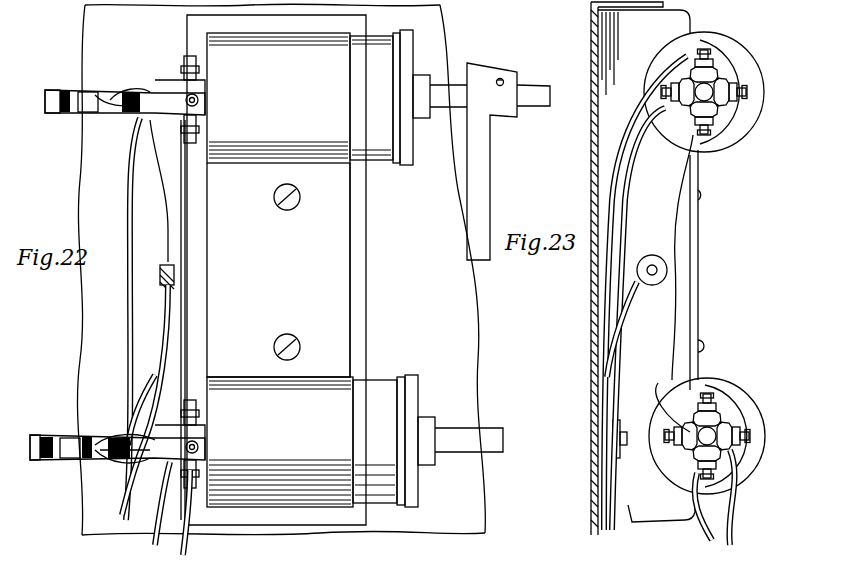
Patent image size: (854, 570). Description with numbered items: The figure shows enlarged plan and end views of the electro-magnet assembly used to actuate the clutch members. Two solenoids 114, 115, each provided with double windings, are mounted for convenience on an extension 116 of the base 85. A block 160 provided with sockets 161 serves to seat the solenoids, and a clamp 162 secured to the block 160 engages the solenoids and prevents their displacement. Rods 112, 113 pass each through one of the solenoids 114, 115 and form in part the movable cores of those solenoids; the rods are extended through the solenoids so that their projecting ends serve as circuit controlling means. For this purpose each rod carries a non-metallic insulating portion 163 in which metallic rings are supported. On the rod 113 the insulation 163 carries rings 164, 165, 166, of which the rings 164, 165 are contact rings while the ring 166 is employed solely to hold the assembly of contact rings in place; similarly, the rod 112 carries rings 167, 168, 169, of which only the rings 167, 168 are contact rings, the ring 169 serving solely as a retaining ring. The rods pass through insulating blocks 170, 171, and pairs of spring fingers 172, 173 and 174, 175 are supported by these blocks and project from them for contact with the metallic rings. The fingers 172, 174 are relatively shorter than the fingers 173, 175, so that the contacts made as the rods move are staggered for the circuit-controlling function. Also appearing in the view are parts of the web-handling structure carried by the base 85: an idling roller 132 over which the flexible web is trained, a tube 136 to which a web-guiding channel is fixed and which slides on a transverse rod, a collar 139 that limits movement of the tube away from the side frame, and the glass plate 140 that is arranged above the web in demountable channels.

In FIG. 23, the base 85 is at (627, 284).
In FIG. 22, the rod 112 is at (460, 452).
In FIG. 22, the rod 113 is at (447, 110).
In FIG. 22, the solenoid 114 is at (370, 492).
In FIG. 22, the solenoid 115 is at (380, 160).
In FIG. 22, the extension of the base 116 is at (470, 303).
In FIG. 23, the extension of the base 116 is at (593, 300).
In FIG. 23, the idling roller 132 is at (663, 559).
In FIG. 22, the tube 136 is at (208, 566).
In FIG. 22, the collar 139 is at (275, 564).
In FIG. 22, the glass plate 140 is at (468, 564).
In FIG. 22, the block 160 is at (360, 232).
In FIG. 23, the block 160 is at (667, 298).
In FIG. 23, the socket 161 is at (680, 44).
In FIG. 22, the clamp 162 is at (340, 285).
In FIG. 23, the clamp 162 is at (700, 212).
In FIG. 22, the non-metallic insulating portion 163 is at (65, 88).
In FIG. 22, the metallic ring 164 is at (127, 84).
In FIG. 22, the metallic ring 165 is at (92, 88).
In FIG. 22, the metallic ring 166 is at (46, 90).
In FIG. 22, the metallic ring 167 is at (100, 436).
In FIG. 22, the metallic ring 168 is at (78, 432).
In FIG. 22, the metallic ring 169 is at (40, 435).
In FIG. 22, the insulating block 170 is at (200, 83).
In FIG. 23, the insulating block 170 is at (722, 418).
In FIG. 22, the insulating block 171 is at (205, 423).
In FIG. 22, the spring finger 172 is at (180, 60).
In FIG. 23, the spring finger 172 is at (718, 118).
In FIG. 22, the spring finger 173 is at (118, 122).
In FIG. 23, the spring finger 173 is at (658, 104).
In FIG. 22, the spring finger 174 is at (163, 508).
In FIG. 23, the spring finger 174 is at (748, 434).
In FIG. 22, the spring finger 175 is at (106, 455).
In FIG. 23, the spring finger 175 is at (712, 438).